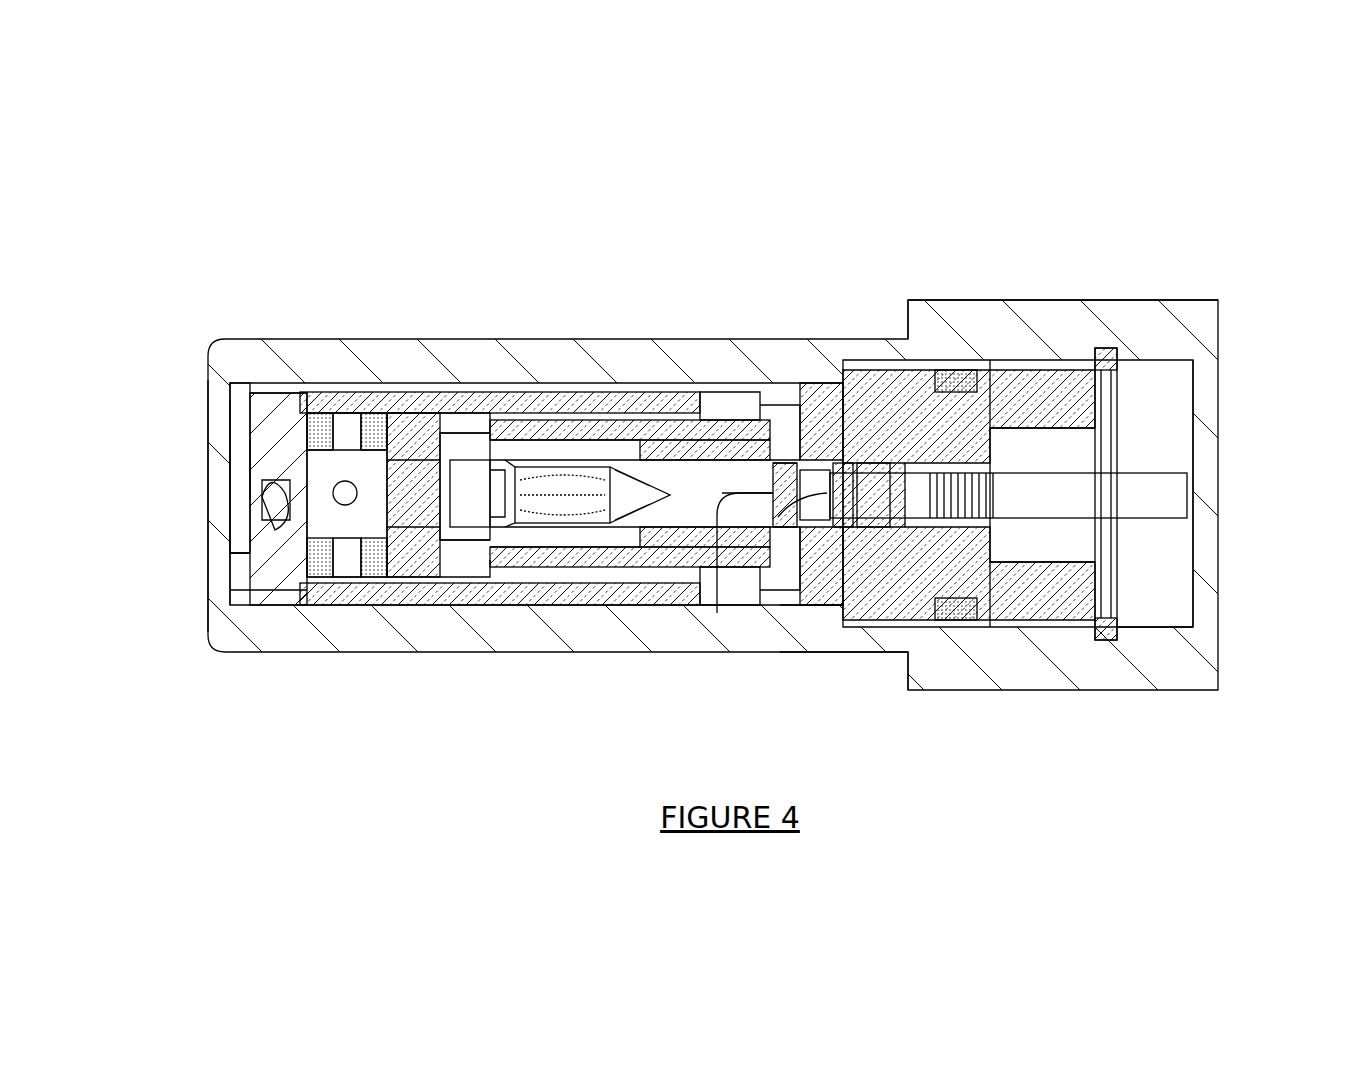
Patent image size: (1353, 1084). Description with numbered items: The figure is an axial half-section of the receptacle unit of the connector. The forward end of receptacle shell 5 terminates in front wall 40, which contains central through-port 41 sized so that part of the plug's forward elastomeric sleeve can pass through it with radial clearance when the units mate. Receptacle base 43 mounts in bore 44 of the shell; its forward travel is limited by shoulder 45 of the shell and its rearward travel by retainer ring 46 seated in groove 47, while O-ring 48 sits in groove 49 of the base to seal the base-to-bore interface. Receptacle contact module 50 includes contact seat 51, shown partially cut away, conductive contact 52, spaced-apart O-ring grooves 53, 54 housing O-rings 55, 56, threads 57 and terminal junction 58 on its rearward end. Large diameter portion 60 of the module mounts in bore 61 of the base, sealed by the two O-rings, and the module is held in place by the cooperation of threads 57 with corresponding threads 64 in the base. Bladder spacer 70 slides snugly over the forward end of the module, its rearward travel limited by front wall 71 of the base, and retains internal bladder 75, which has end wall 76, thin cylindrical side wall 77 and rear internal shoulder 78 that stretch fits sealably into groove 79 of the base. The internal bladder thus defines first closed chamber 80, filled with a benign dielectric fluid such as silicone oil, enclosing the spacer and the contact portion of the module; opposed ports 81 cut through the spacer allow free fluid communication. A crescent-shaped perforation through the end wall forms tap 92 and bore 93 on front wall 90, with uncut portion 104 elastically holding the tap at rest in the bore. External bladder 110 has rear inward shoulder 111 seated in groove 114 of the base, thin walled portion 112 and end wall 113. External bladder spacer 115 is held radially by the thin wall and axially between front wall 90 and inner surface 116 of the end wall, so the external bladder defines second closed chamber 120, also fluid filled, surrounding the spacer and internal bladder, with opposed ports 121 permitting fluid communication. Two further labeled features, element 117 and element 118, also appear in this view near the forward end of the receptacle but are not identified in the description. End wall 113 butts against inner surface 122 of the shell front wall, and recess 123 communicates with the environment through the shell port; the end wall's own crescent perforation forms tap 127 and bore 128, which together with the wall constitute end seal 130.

The receptacle shell 5 is at (1047, 337).
The front wall 40 is at (215, 598).
The central through-port 41 is at (217, 522).
The receptacle base 43 is at (905, 550).
The bore 44 is at (875, 500).
The shoulder 45 is at (835, 618).
The retainer ring 46 is at (1120, 615).
The groove 47 is at (1117, 333).
The O-ring 48 is at (955, 385).
The groove 49 is at (965, 420).
The receptacle contact module 50 is at (960, 600).
The contact seat 51 is at (572, 520).
The conductive contact 52 is at (530, 455).
The O-ring groove 53 is at (735, 540).
The O-ring groove 54 is at (790, 540).
The O-ring 55 is at (747, 450).
The O-ring 56 is at (847, 460).
The threads 57 is at (1108, 622).
The terminal junction 58 is at (1187, 490).
The large diameter portion 60 is at (705, 493).
The bore 61 is at (900, 482).
The threads 64 is at (1100, 630).
The bladder spacer 70 is at (525, 520).
The front wall 71 is at (652, 440).
The internal bladder 75 is at (455, 425).
The end wall 76 is at (420, 400).
The thin cylindrical side wall 77 is at (598, 560).
The rear internal shoulder 78 is at (715, 407).
The groove 79 is at (750, 460).
The first closed chamber 80 is at (655, 560).
The opposed ports 81 is at (482, 560).
The front wall 90 is at (418, 540).
The tap 92 is at (460, 500).
The bore 93 is at (385, 455).
The uncut portion 104 is at (265, 472).
The external bladder 110 is at (622, 398).
The rear inward shoulder 111 is at (810, 425).
The thin walled portion 112 is at (553, 398).
The end wall 113 is at (232, 557).
The groove 114 is at (803, 460).
The external bladder spacer 115 is at (310, 443).
The inner surface 116 is at (330, 445).
The plug wall 117 is at (242, 404).
The seal groove 118 is at (280, 388).
The second closed chamber 120 is at (592, 405).
The opposed ports 121 is at (347, 505).
The inner surface 122 is at (245, 585).
The recess 123 is at (242, 473).
The tap 127 is at (323, 440).
The bore 128 is at (262, 497).
The end seal 130 is at (238, 408).